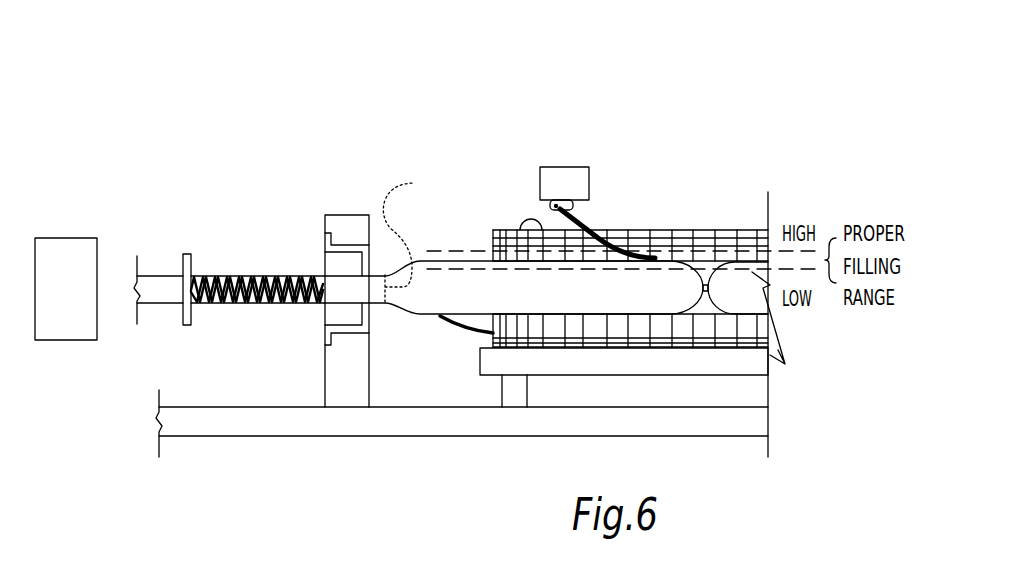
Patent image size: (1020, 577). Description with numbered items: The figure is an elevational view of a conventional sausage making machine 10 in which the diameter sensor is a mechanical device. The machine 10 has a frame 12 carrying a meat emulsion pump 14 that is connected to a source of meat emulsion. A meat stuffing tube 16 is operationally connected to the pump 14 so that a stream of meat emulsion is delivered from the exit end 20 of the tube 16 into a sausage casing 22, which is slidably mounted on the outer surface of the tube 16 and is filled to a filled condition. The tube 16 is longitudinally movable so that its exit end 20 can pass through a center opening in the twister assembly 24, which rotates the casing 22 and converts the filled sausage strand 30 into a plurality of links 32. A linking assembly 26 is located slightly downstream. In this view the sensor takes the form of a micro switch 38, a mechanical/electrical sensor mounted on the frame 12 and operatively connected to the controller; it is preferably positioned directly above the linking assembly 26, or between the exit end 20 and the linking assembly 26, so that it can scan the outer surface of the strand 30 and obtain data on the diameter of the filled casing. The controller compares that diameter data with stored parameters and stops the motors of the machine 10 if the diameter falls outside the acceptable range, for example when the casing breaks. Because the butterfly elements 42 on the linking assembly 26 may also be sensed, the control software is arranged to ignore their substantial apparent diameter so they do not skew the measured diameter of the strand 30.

The sausage making machine 10 is at (323, 116).
The frame 12 is at (322, 436).
The meat emulsion pump 14 is at (65, 238).
The meat stuffing tube 16 is at (172, 276).
The exit end 20 is at (410, 237).
The sausage casing 22 is at (250, 276).
The twister assembly 24 is at (348, 215).
The linking assembly 26 is at (644, 229).
The filled sausage strand 30 is at (676, 262).
The links 32 is at (471, 284).
The micro switch 38 is at (568, 167).
The butterfly elements 42 is at (465, 331).